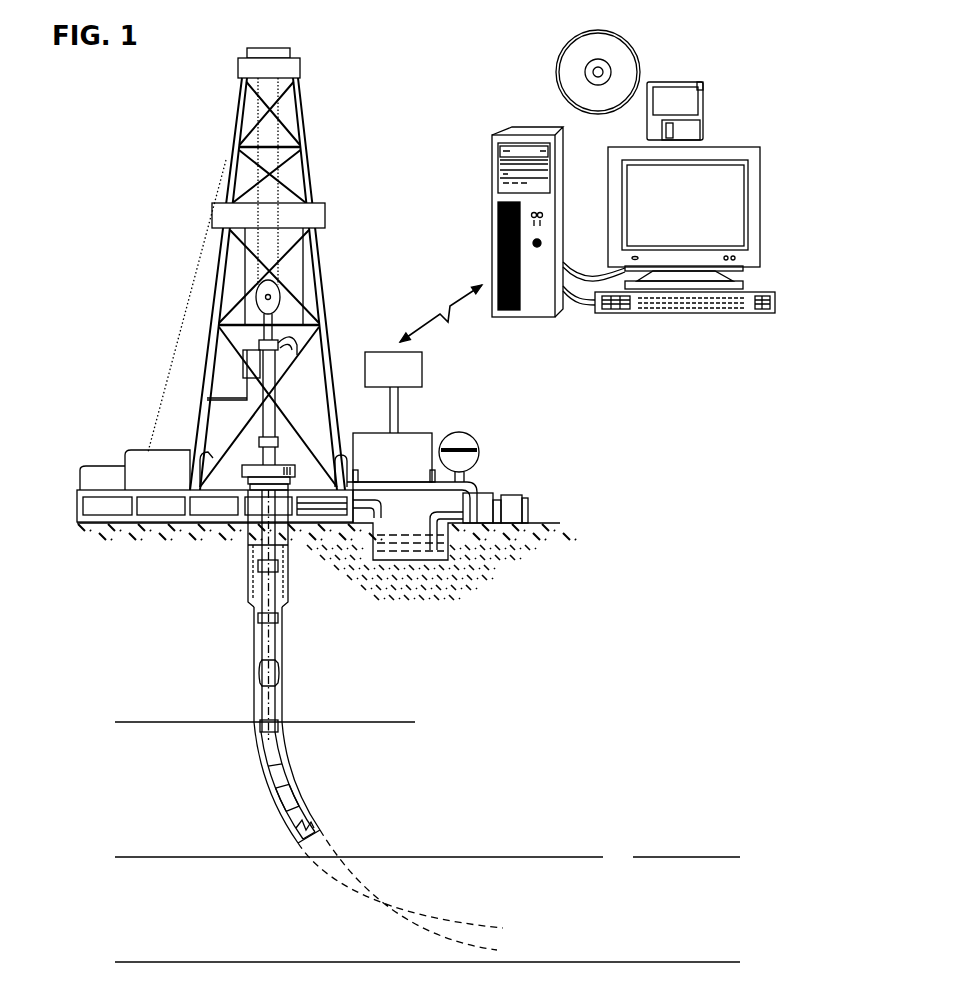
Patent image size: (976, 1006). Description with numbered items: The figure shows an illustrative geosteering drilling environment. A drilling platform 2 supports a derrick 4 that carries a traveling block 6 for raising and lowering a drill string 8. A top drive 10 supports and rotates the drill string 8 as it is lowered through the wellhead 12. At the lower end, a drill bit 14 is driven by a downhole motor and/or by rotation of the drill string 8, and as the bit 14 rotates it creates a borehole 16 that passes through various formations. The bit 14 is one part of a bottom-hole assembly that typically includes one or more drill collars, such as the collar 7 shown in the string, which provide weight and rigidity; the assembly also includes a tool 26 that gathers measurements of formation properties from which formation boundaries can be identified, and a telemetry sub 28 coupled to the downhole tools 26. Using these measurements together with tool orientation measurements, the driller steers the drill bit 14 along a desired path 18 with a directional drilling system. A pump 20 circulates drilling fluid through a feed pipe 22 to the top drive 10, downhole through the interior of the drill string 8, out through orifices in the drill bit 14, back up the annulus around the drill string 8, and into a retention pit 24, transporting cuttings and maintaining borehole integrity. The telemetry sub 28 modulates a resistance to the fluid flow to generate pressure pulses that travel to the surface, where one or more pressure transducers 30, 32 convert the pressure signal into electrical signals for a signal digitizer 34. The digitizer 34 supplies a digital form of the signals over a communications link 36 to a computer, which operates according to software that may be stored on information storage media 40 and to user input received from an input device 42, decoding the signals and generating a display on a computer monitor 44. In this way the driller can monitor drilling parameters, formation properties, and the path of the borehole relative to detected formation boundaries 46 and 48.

The drilling platform 2 is at (77, 500).
The derrick 4 is at (309, 173).
The traveling block 6 is at (278, 295).
The drill collar 7 is at (264, 617).
The drill string 8 is at (276, 638).
The top drive 10 is at (269, 368).
The wellhead 12 is at (250, 463).
The drill bit 14 is at (303, 815).
The borehole 16 is at (282, 652).
The desired path 18 is at (430, 918).
The pump 20 is at (478, 498).
The feed pipe 22 is at (450, 487).
The retention pit 24 is at (392, 545).
The tool 26 is at (290, 798).
The telemetry sub 28 is at (278, 780).
The pressure transducer 30 is at (357, 477).
The pressure transducer 32 is at (428, 475).
The signal digitizer 34 is at (393, 392).
The communications link 36 is at (441, 311).
The information storage media 40 is at (662, 82).
The input device 42 is at (752, 313).
The computer monitor 44 is at (750, 262).
The formation boundary 46 is at (603, 857).
The formation boundary 48 is at (626, 960).